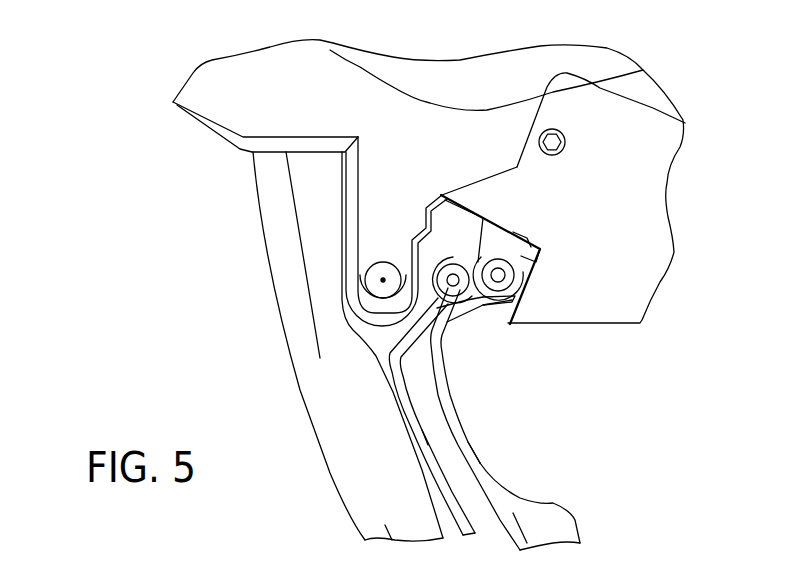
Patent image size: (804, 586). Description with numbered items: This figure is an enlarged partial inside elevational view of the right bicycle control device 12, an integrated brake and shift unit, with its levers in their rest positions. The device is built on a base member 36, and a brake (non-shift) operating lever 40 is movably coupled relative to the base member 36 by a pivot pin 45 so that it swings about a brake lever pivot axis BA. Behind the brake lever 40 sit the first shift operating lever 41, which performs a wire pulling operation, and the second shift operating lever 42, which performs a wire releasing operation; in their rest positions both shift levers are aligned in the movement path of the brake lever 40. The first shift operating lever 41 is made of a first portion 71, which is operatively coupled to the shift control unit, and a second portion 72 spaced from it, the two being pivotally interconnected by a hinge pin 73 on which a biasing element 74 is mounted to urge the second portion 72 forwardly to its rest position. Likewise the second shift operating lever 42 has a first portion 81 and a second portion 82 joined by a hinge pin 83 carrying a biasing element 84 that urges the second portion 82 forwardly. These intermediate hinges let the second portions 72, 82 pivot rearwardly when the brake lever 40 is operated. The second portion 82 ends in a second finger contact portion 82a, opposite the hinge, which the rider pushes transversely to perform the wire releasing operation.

The bicycle control device 12 is at (165, 62).
The base member 36 is at (690, 170).
The brake (non-shift) operating lever 40 is at (328, 498).
The first shift operating lever 41 is at (445, 427).
The second shift operating lever 42 is at (494, 449).
The pivot pin 45 is at (377, 274).
The brake lever pivot axis BA is at (383, 280).
The first portion 71 is at (470, 245).
The second portion 72 is at (408, 402).
The hinge pin 73 is at (453, 280).
The biasing element 74 is at (448, 312).
The first portion 81 is at (500, 252).
The second portion 82 is at (449, 390).
The second finger contact portion 82a is at (553, 527).
The hinge pin 83 is at (499, 276).
The biasing element 84 is at (483, 312).